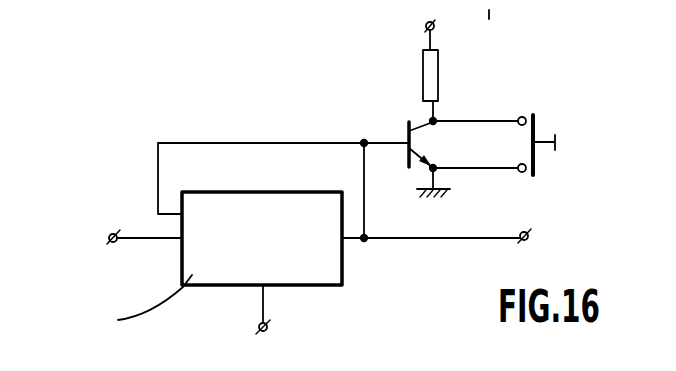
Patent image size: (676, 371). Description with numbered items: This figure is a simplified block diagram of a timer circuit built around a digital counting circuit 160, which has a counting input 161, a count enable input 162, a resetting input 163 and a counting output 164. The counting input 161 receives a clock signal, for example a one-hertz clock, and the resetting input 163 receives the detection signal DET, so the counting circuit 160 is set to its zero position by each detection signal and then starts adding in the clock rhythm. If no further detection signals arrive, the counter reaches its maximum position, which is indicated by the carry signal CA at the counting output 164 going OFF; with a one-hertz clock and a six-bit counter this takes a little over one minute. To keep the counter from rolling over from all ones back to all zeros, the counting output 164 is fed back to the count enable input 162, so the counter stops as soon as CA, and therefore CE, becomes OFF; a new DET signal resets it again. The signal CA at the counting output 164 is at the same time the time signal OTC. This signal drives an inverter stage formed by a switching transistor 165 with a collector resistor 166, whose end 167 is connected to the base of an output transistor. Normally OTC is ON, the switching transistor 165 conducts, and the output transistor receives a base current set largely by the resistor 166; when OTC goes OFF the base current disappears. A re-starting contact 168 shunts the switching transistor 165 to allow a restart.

The digital counting circuit 160 is at (232, 287).
The counting input 161 is at (181, 241).
The count enable input 162 is at (178, 210).
The resetting input 163 is at (264, 286).
The counting output 164 is at (344, 240).
The switching transistor 165 is at (420, 127).
The collector resistor 166 is at (438, 77).
The end 167 is at (427, 24).
The re-starting contact 168 is at (535, 159).